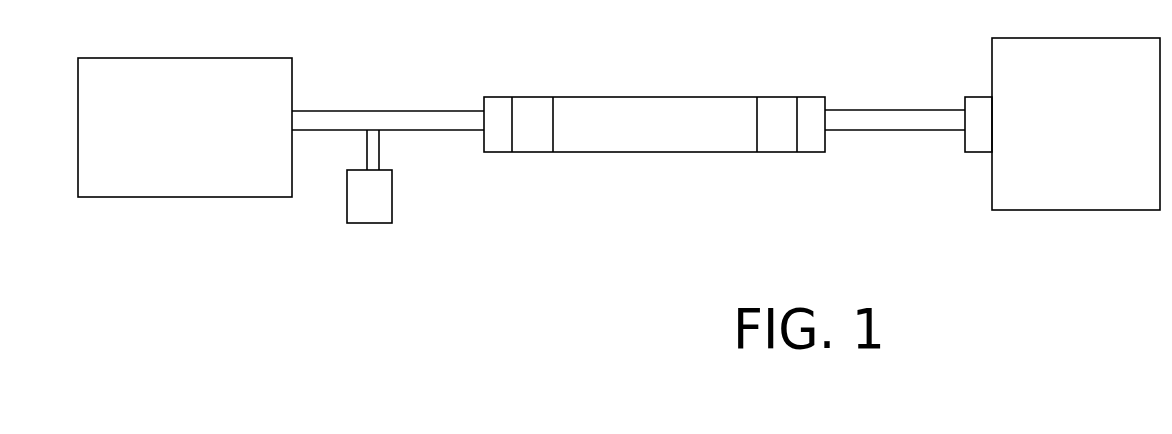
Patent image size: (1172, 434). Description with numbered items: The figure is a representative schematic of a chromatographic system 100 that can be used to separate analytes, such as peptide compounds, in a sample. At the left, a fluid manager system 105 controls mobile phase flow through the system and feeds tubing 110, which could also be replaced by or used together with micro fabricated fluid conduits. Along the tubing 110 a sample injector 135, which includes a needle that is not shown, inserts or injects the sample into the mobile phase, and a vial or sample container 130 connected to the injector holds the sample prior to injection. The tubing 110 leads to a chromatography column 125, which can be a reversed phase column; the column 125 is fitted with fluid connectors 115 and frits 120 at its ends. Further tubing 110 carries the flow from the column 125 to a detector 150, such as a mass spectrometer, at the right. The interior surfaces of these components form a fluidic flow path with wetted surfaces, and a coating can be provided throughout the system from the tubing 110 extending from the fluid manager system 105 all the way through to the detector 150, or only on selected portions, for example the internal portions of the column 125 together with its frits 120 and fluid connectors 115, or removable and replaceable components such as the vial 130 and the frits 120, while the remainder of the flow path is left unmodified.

The chromatographic system 100 is at (660, 258).
The fluid manager system 105 is at (150, 103).
The tubing 110 is at (364, 111).
The fluid connectors 115 is at (498, 97).
The frits 120 is at (527, 152).
The chromatography column 125 is at (657, 97).
The vial or sample container 130 is at (347, 207).
The sample injector 135 is at (379, 150).
The detector 150 is at (1063, 83).